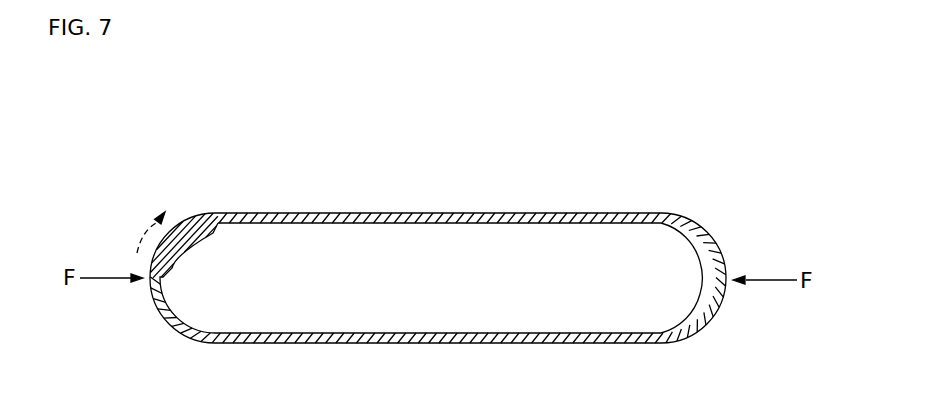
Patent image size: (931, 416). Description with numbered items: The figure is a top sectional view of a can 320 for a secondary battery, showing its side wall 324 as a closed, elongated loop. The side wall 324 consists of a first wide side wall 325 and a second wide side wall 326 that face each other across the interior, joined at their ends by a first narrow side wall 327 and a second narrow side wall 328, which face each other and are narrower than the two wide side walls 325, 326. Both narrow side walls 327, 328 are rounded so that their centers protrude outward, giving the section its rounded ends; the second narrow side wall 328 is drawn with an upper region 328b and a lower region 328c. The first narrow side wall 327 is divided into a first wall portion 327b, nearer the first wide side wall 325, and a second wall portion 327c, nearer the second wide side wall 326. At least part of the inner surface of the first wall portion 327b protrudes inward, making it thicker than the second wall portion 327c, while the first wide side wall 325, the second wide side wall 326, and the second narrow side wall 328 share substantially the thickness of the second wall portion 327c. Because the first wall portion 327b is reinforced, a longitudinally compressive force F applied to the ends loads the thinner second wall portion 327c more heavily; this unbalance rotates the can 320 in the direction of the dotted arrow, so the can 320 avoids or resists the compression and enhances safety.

The can 320 is at (138, 122).
The side wall 324 is at (578, 204).
The first wide side wall 325 is at (393, 213).
The second wide side wall 326 is at (303, 343).
The first narrow side wall 327 is at (152, 287).
The first wall portion 327b is at (190, 225).
The second wall portion 327c is at (168, 316).
The second narrow side wall 328 is at (724, 262).
The upper part of second end portion 328b is at (713, 238).
The lower part of second end portion 328c is at (706, 320).